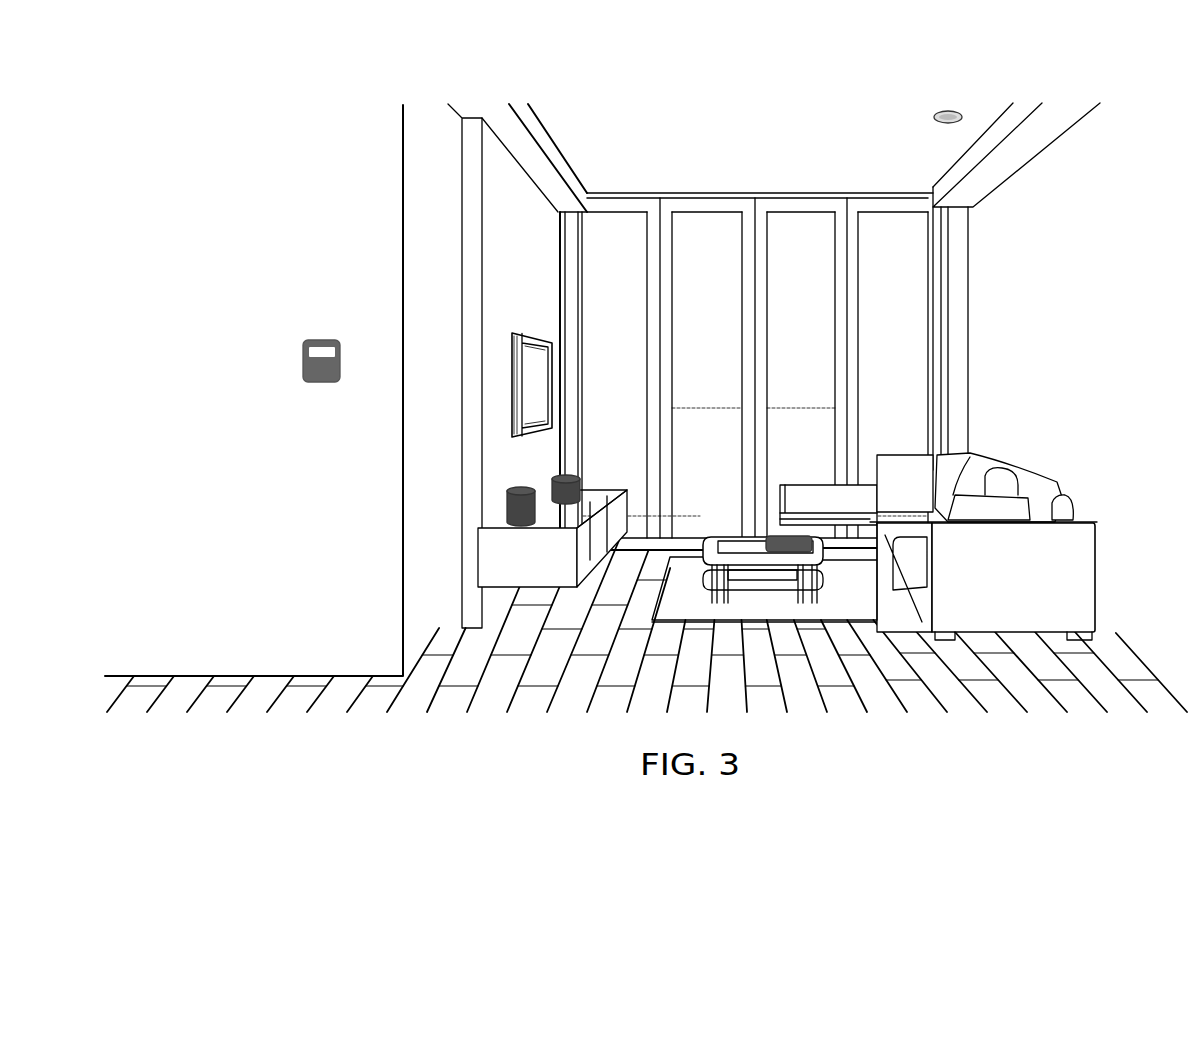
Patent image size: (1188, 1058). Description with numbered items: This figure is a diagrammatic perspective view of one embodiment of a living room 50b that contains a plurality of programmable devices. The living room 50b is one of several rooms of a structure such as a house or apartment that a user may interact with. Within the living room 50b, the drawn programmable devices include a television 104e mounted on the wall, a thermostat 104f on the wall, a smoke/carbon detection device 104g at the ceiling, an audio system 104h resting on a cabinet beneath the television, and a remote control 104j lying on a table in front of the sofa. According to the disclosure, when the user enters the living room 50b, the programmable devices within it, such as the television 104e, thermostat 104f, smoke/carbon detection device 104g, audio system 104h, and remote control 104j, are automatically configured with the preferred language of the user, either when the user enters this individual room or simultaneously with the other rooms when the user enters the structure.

The living room 50b is at (880, 609).
The television 104e is at (537, 367).
The thermostat 104f is at (292, 372).
The smoke/carbon detection 104g is at (970, 123).
The audio system 104h is at (517, 503).
The remote control 104j is at (813, 533).